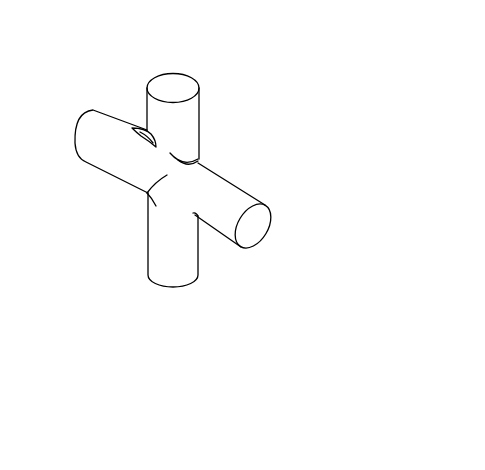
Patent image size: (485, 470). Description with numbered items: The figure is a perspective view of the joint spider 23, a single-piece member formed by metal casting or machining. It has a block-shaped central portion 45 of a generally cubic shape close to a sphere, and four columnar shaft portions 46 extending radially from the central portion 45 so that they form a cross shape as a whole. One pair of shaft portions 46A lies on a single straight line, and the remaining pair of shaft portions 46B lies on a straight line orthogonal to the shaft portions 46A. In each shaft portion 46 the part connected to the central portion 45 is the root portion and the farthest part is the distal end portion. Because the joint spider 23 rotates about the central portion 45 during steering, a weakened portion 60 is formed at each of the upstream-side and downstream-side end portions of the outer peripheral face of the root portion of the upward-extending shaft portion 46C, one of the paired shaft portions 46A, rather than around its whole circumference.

The joint spider 23 is at (165, 306).
The central portion 45 is at (147, 193).
The shaft portions 46 is at (133, 53).
The shaft portions 46A is at (157, 115).
The shaft portions 46B is at (92, 137).
The shaft portion 46C is at (181, 122).
The weakened portion 60 is at (200, 156).